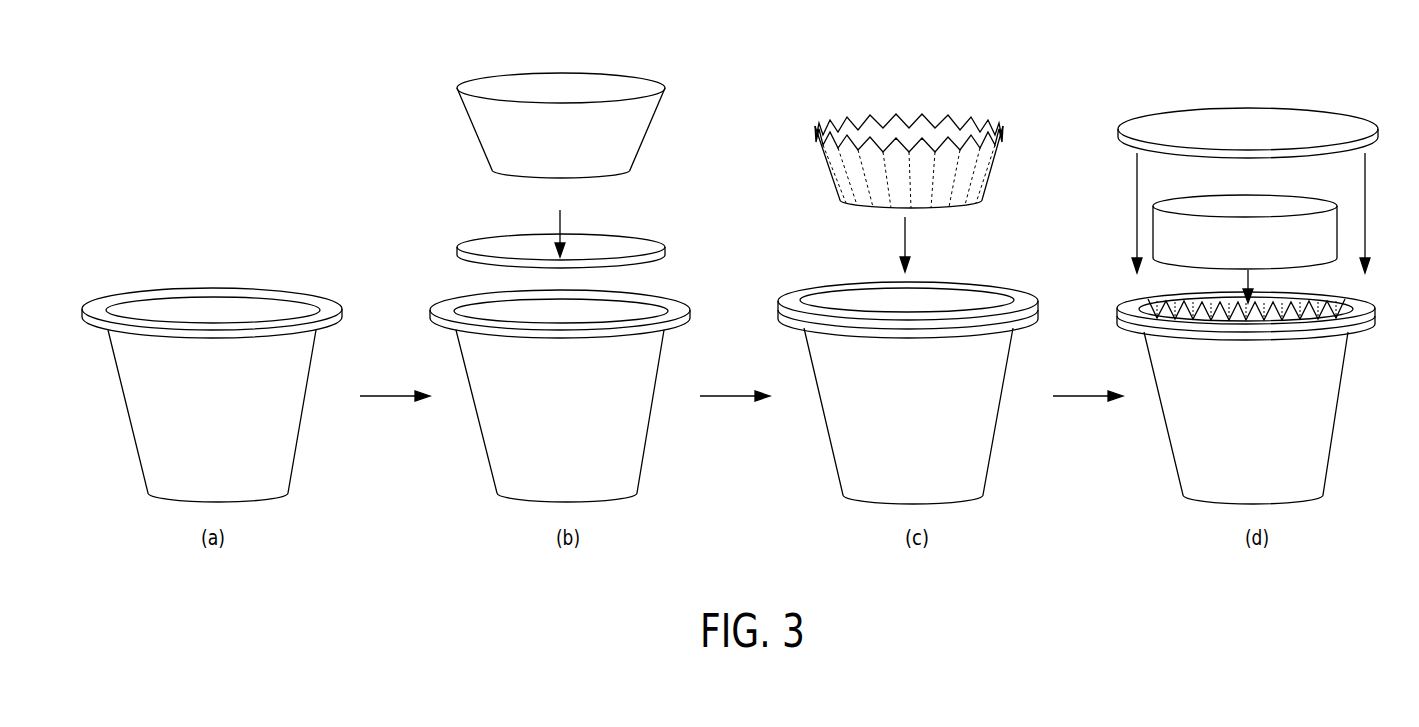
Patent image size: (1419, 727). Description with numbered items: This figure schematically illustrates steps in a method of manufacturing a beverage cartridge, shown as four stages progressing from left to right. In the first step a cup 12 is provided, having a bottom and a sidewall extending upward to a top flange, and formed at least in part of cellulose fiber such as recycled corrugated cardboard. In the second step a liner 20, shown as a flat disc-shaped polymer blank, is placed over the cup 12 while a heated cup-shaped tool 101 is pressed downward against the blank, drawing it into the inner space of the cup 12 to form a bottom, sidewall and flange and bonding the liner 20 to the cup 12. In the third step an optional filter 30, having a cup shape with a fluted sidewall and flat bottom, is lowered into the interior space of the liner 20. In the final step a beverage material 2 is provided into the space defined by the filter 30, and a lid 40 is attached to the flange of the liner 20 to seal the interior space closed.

The cup 12 is at (131, 418).
The liner 20 is at (470, 240).
The tool 101 is at (477, 142).
The filter 30 is at (830, 168).
The lid 40 is at (1353, 115).
The beverage material 2 is at (1153, 222).